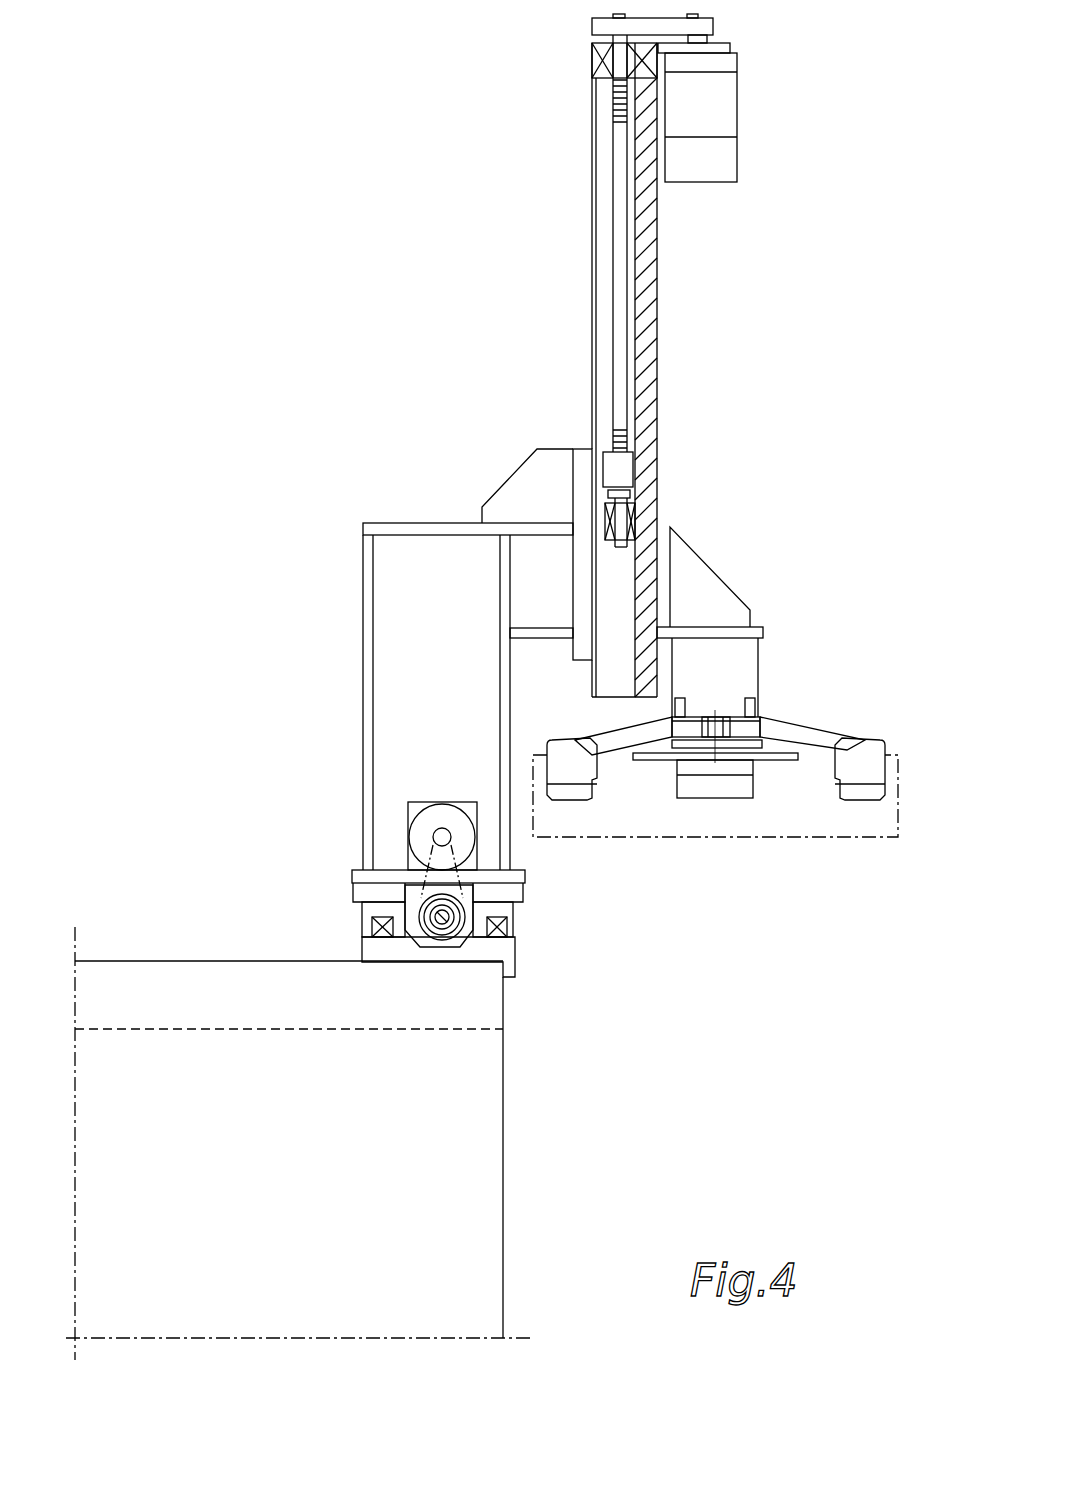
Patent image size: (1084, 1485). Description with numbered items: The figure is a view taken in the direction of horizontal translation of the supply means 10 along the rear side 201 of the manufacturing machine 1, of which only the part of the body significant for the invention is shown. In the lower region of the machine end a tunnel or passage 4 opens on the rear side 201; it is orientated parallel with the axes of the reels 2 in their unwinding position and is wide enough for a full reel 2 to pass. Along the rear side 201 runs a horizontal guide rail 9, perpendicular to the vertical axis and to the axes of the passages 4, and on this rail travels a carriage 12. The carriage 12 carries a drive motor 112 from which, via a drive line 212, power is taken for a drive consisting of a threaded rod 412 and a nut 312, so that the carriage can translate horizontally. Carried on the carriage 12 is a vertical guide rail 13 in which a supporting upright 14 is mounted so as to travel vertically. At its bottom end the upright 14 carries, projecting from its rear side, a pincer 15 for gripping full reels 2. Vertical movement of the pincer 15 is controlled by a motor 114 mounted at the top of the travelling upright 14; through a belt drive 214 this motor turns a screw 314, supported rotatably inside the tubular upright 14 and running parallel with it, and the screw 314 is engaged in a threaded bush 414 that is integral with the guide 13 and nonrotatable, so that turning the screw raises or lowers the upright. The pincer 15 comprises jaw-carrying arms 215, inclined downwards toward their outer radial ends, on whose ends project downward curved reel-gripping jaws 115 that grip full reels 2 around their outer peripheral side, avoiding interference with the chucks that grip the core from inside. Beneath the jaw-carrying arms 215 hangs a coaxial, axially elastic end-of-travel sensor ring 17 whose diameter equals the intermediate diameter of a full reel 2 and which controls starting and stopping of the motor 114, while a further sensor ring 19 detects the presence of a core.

The manufacturing machine 1 is at (168, 955).
The tunnel or passage 4 is at (490, 1128).
The rear side 201 is at (508, 1204).
The supply means 10 is at (360, 589).
The vertical guide rail 13 is at (580, 456).
The supporting upright 14 is at (659, 229).
The screw 314 is at (612, 153).
The threaded bush 414 is at (628, 467).
The belt drive 214 is at (590, 25).
The motor 114 is at (725, 118).
The gripping pincer 15 is at (862, 737).
The jaw-carrying arms 215 is at (598, 735).
The reel-gripping jaws 115 is at (880, 752).
The reel 2 is at (870, 840).
The end-of-travel sensor ring 17 is at (768, 760).
The sensor ring 19 is at (673, 745).
The drive motor 112 is at (443, 815).
The drive line 212 is at (420, 867).
The carriage 12 is at (515, 908).
The horizontal guide rail 9 is at (520, 948).
The nut 312 is at (443, 933).
The threaded rod 412 is at (439, 925).